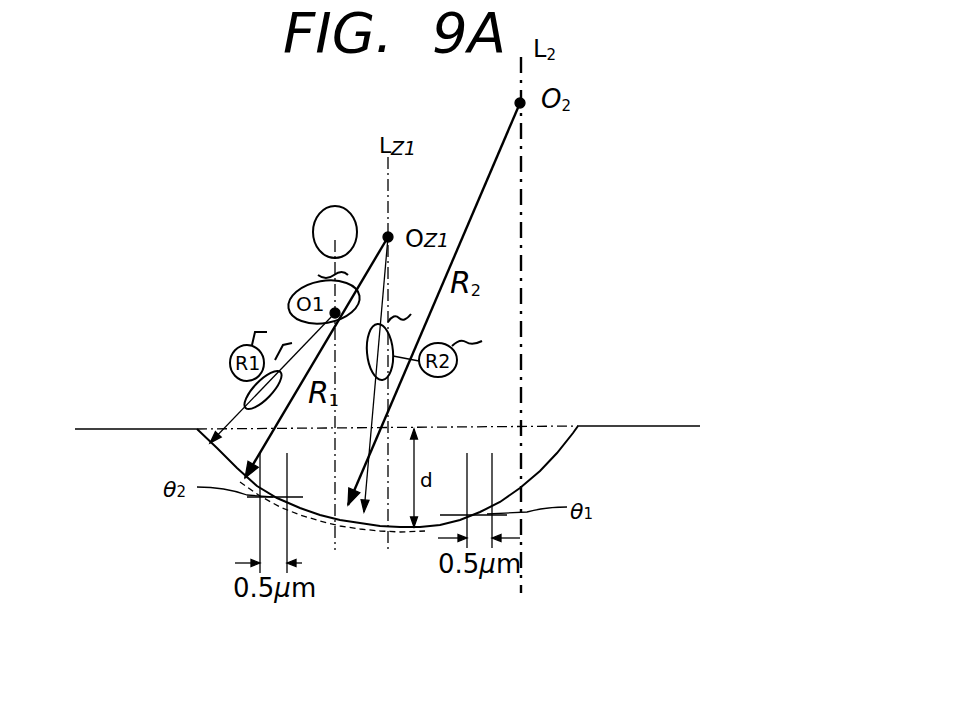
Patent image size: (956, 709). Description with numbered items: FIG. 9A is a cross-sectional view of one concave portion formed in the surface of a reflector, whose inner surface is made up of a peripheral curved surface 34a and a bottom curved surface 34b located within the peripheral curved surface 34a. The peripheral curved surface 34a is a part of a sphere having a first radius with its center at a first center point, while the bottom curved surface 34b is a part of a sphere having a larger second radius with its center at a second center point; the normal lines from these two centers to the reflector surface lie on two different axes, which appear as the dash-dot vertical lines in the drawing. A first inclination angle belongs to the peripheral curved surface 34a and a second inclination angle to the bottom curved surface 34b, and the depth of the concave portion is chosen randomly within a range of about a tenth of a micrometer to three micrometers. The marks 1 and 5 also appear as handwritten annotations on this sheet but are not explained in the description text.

The optical recording medium 1 is at (212, 163).
The first beam axis L1 5 is at (358, 183).
The peripheral curved surface 34a is at (548, 462).
The bottom curved surface 34b is at (321, 516).